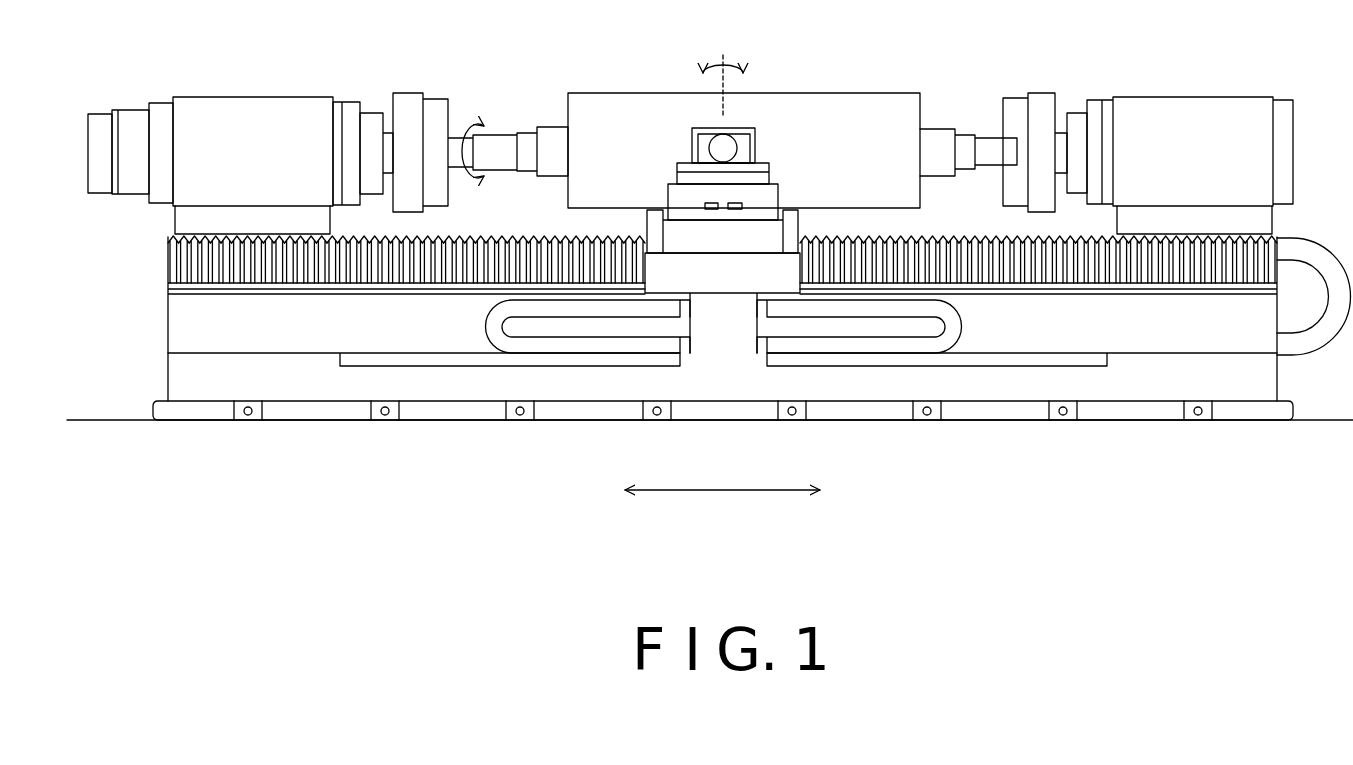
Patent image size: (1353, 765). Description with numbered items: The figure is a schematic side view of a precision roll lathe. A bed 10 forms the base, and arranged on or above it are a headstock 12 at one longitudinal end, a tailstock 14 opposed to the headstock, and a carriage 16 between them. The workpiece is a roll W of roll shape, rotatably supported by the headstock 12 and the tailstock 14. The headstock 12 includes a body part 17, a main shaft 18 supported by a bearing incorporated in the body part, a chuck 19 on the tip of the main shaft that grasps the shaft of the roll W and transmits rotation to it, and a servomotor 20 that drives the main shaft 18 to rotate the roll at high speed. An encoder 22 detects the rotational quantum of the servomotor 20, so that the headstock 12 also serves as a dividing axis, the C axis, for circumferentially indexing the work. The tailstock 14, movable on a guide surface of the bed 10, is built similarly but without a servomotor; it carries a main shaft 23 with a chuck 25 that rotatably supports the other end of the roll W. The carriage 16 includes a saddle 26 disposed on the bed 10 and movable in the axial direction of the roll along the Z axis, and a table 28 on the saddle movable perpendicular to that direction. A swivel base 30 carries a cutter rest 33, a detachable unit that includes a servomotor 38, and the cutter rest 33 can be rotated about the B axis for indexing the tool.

The bed 10 is at (192, 325).
The headstock 12 is at (234, 94).
The tailstock 14 is at (1188, 92).
The carriage 16 is at (792, 172).
The body part 17 is at (202, 128).
The main shaft 18 is at (375, 122).
The chuck 19 is at (410, 110).
The servomotor 20 is at (135, 180).
The encoder 22 is at (100, 132).
The main shaft 23 is at (1072, 120).
The chuck 25 is at (1040, 112).
The saddle 26 is at (728, 278).
The table 28 is at (760, 200).
The swivel base 30 is at (687, 177).
The cutter rest 33 is at (748, 120).
The servomotor 38 is at (718, 147).
The roll W is at (833, 112).
The B axis B is at (712, 85).
The C axis C is at (473, 137).
The Z axis Z is at (722, 475).